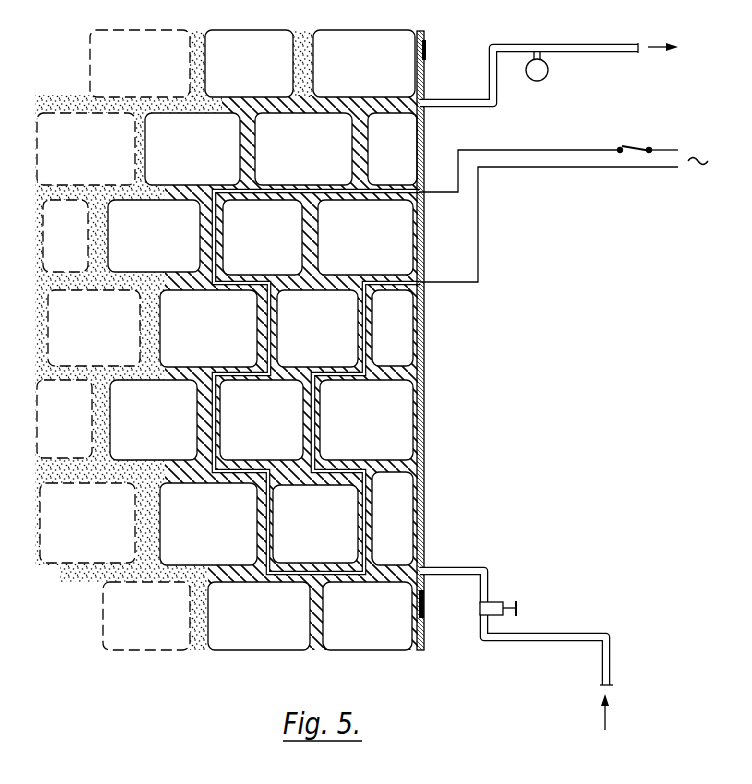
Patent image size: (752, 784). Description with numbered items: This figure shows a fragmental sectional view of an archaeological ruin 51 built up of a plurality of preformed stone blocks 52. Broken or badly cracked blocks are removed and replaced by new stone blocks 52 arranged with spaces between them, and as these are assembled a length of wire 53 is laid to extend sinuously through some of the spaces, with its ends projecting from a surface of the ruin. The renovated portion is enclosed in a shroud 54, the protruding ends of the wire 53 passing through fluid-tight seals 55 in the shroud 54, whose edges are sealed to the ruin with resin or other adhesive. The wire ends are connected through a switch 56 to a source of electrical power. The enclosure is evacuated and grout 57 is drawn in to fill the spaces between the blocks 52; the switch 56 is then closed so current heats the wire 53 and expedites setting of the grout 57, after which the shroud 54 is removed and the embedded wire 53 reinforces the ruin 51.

The archaeological ruin 51 is at (258, 364).
The stone blocks 52 is at (345, 518).
The wire 53 is at (314, 423).
The shroud 54 is at (418, 455).
The fluid-tight seals 55 is at (427, 196).
The switch 56 is at (633, 144).
The grout 57 is at (400, 468).